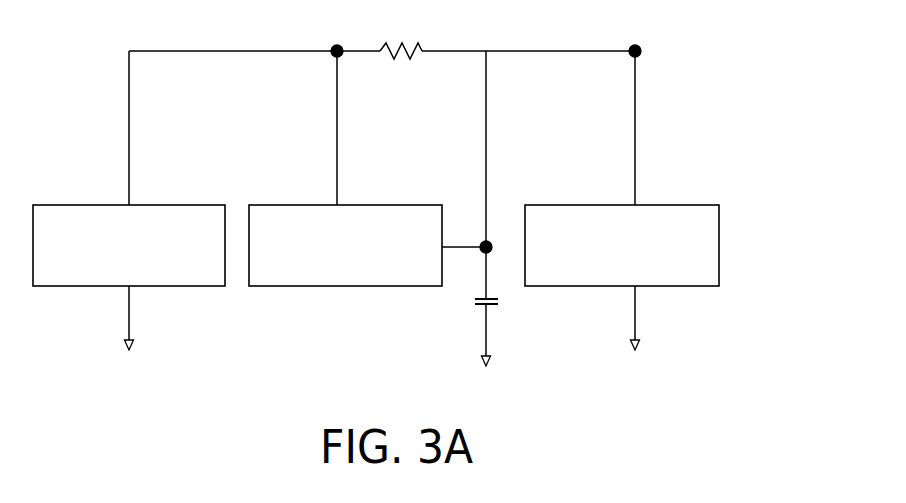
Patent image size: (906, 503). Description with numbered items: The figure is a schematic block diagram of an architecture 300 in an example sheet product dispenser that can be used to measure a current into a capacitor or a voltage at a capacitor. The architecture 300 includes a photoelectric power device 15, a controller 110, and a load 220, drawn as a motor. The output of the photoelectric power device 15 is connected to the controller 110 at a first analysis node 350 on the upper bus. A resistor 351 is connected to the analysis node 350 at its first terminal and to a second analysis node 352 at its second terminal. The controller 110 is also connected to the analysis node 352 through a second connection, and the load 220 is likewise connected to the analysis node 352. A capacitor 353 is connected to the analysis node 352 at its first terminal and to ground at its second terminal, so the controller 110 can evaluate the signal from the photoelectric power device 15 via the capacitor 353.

The architecture 300 is at (700, 38).
The photoelectric power device 15 is at (153, 205).
The controller 110 is at (390, 205).
The load 220 is at (674, 205).
The analysis node 350 is at (331, 46).
The resistor 351 is at (397, 36).
The analysis node 352 is at (490, 242).
The capacitor 353 is at (502, 309).